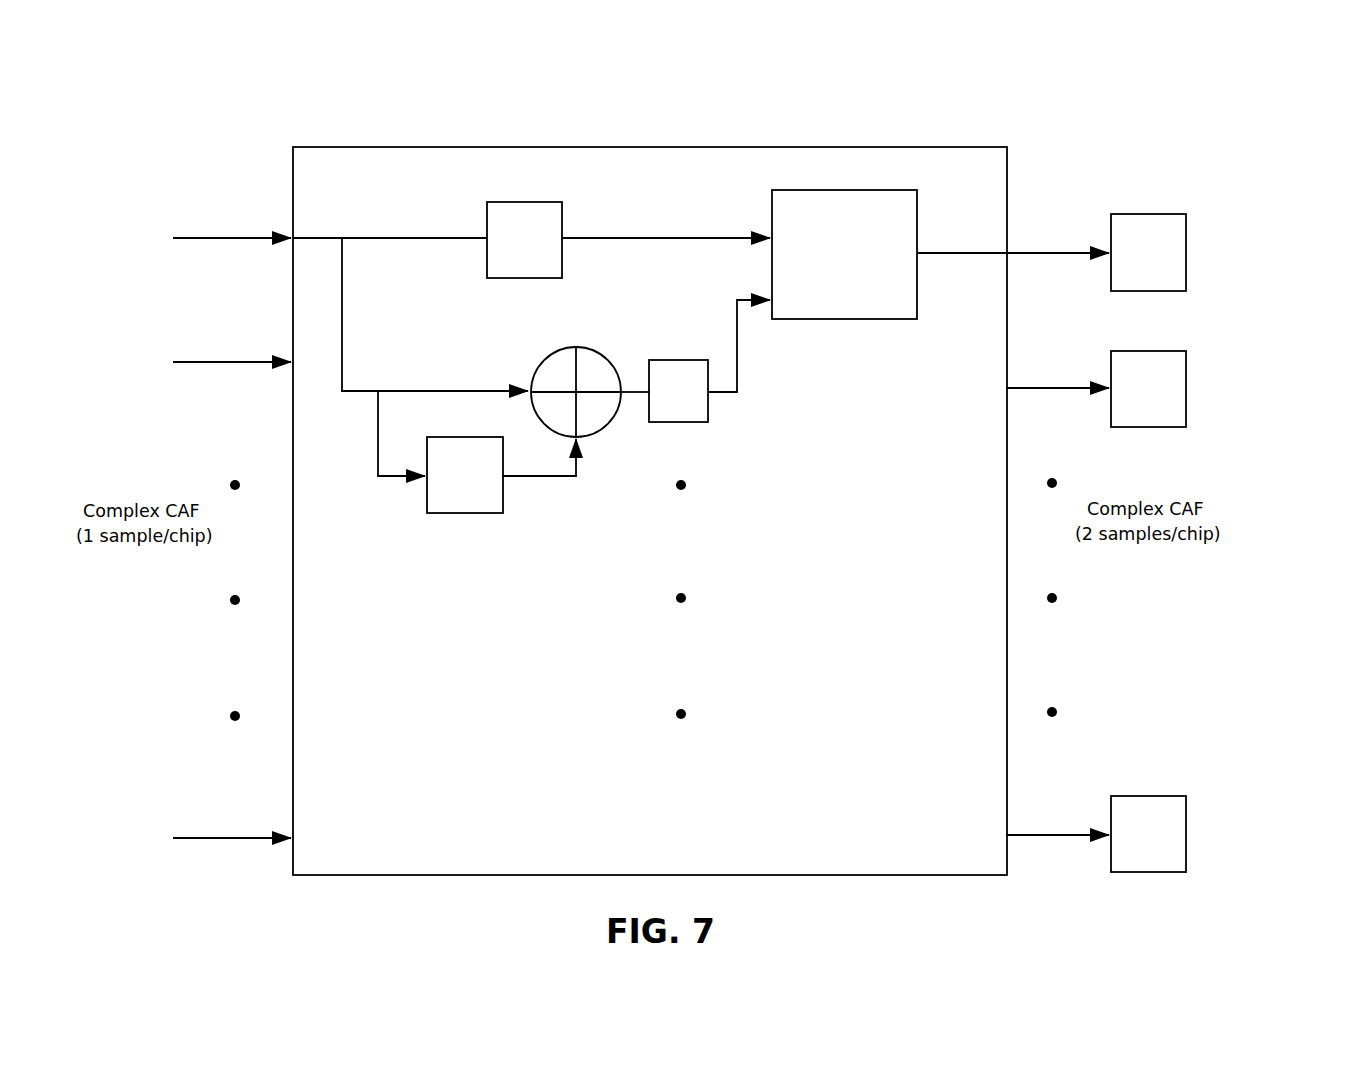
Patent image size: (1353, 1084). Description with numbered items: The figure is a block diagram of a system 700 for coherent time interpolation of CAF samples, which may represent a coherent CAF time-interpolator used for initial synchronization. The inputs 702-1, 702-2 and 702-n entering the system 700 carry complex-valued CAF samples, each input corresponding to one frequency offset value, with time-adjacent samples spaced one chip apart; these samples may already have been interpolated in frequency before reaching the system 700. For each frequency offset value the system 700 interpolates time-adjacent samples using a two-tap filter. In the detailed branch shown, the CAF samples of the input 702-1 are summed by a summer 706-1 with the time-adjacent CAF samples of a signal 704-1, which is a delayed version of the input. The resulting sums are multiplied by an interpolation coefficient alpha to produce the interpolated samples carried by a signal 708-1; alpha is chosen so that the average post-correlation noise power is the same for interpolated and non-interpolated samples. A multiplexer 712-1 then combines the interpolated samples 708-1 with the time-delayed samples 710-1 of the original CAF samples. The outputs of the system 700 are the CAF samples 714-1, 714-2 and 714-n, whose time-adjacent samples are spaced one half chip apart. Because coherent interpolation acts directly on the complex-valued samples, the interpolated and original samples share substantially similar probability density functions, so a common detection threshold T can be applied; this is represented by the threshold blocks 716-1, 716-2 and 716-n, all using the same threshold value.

The system 700 is at (1078, 138).
The input 702-1 is at (220, 238).
The input 702-2 is at (220, 362).
The input 702-n is at (220, 838).
The signal 704-1 is at (540, 477).
The summer 706-1 is at (587, 349).
The signal 708-1 is at (737, 374).
The time-delayed samples 710-1 is at (605, 238).
The multiplexer 712-1 is at (880, 320).
The CAF samples 714-1 is at (1027, 253).
The CAF samples 714-2 is at (1027, 388).
The CAF samples 714-n is at (1043, 836).
The threshold block 716-1 is at (1186, 251).
The threshold block 716-2 is at (1186, 386).
The threshold block 716-n is at (1186, 832).